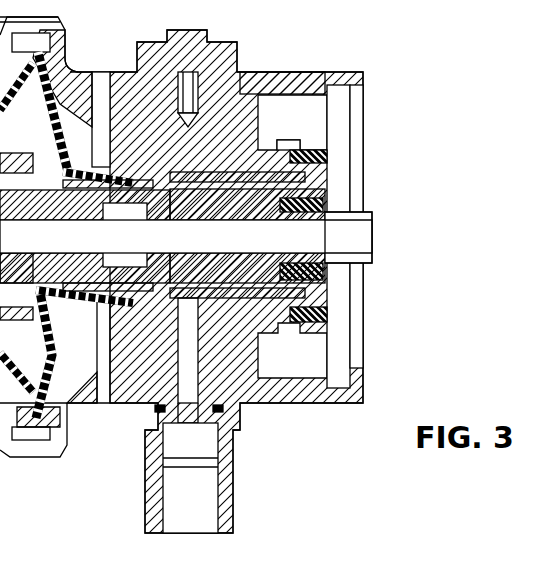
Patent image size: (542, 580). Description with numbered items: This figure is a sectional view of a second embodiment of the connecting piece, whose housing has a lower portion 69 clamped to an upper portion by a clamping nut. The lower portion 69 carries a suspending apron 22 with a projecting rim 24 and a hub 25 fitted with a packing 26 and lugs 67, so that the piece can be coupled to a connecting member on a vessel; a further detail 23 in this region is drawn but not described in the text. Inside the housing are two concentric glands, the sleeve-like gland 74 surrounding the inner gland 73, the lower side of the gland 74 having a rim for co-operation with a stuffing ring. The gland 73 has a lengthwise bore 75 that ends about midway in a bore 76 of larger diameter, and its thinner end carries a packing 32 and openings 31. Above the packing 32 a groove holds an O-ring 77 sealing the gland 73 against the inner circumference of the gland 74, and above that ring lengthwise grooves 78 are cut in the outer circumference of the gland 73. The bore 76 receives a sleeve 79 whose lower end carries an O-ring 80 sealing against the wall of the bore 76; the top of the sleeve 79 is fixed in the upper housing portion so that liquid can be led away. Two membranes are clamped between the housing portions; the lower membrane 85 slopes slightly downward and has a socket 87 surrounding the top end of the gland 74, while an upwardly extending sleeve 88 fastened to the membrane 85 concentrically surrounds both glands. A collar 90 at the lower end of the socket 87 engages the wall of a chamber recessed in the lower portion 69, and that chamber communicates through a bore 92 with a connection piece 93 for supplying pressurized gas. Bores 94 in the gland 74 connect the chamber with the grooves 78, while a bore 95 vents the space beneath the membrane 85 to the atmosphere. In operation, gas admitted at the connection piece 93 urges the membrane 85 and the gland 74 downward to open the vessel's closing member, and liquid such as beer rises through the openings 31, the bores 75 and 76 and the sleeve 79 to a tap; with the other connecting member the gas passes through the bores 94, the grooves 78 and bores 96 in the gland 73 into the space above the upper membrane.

The suspending apron 22 is at (318, 78).
The end plate inner member 23 is at (338, 378).
The projecting rim 24 is at (357, 387).
The hub 25 is at (265, 148).
The packing 26 is at (327, 157).
The openings 31 is at (363, 214).
The packing 32 is at (325, 200).
The lugs 67 is at (288, 142).
The lower portion of the housing 69 is at (258, 70).
The gland 73 is at (148, 258).
The sleeve-like gland 74 is at (226, 280).
The bore 75 is at (355, 240).
The bore of larger diameter 76 is at (145, 228).
The O-ring 77 is at (258, 190).
The grooves 78 is at (195, 195).
The sleeve 79 is at (96, 242).
The O-ring 80 is at (88, 265).
The membrane 85 is at (50, 112).
The socket 87 is at (93, 170).
The sleeve 88 is at (16, 160).
The collar 90 is at (125, 180).
The bore 92 is at (190, 340).
The connection piece 93 is at (153, 482).
The bores 94 is at (150, 302).
The bore 95 is at (103, 72).
The bores 96 is at (13, 240).